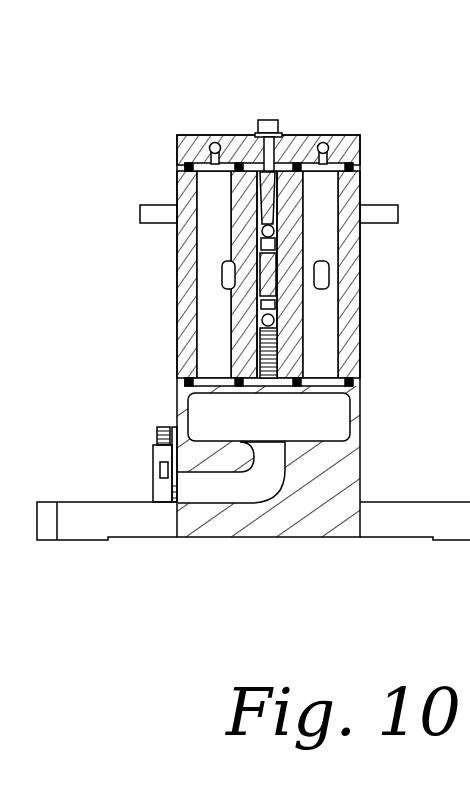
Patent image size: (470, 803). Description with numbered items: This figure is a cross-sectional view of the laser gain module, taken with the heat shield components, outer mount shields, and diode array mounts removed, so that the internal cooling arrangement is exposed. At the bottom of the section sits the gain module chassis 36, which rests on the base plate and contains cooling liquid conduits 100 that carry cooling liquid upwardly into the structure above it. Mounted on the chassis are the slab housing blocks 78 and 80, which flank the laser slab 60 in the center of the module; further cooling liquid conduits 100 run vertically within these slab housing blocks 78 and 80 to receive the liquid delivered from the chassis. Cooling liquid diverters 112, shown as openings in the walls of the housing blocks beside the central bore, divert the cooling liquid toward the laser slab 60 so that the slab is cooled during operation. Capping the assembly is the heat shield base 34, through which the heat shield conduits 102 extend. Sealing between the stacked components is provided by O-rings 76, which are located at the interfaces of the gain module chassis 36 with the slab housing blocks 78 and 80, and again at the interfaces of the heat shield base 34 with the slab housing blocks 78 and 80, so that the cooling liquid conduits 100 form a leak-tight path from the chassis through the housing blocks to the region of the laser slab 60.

The heat shield base 34 is at (297, 140).
The gain module chassis 36 is at (340, 469).
The laser slab 60 is at (332, 248).
The O-rings 76 is at (190, 169).
The slab housing block 78 is at (350, 307).
The slab housing block 80 is at (177, 237).
The cooling liquid conduits 100 is at (215, 333).
The heat shield conduits 102 is at (214, 142).
The cooling liquid diverters 112 is at (226, 277).